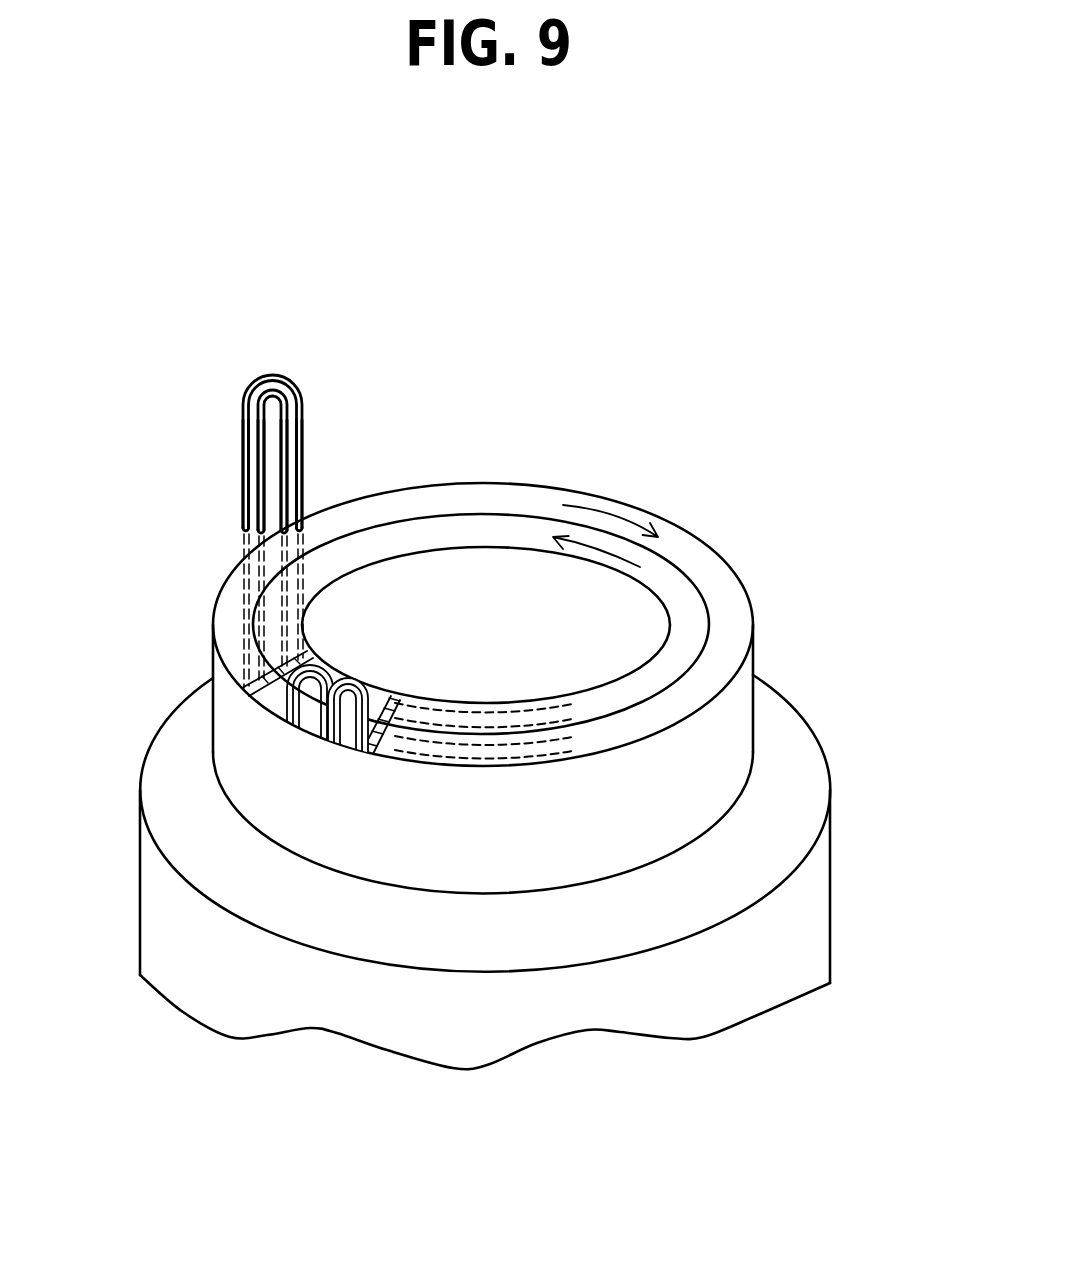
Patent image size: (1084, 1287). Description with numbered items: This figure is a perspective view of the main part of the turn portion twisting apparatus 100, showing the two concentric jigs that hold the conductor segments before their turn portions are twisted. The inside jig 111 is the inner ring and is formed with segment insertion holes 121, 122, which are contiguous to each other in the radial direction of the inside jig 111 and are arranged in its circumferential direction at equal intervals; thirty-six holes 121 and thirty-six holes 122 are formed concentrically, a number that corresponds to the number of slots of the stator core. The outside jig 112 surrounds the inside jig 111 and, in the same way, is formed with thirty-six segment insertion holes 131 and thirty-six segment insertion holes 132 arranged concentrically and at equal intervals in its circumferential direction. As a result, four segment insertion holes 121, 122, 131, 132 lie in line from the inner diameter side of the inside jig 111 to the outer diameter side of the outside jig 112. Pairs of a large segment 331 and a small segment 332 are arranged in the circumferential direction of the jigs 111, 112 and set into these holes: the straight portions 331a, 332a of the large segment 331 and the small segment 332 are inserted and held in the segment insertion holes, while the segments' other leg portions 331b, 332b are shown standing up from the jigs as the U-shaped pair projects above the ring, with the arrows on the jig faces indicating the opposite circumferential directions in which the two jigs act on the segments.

The stator 100 is at (537, 712).
The inside jig 111 is at (687, 600).
The outside jig 112 is at (733, 622).
The segment insertion hole 121 is at (432, 716).
The segment insertion hole 122 is at (420, 740).
The segment insertion hole 131 is at (389, 733).
The segment insertion hole 132 is at (419, 690).
The large segment 331 is at (285, 485).
The small segment 332 is at (272, 503).
The straight portion of the large segment 331a is at (296, 413).
The leg portion of first conductor segment 331b is at (245, 428).
The straight portion of the small segment 332a is at (288, 468).
The leg portion of second conductor segment 332b is at (260, 482).